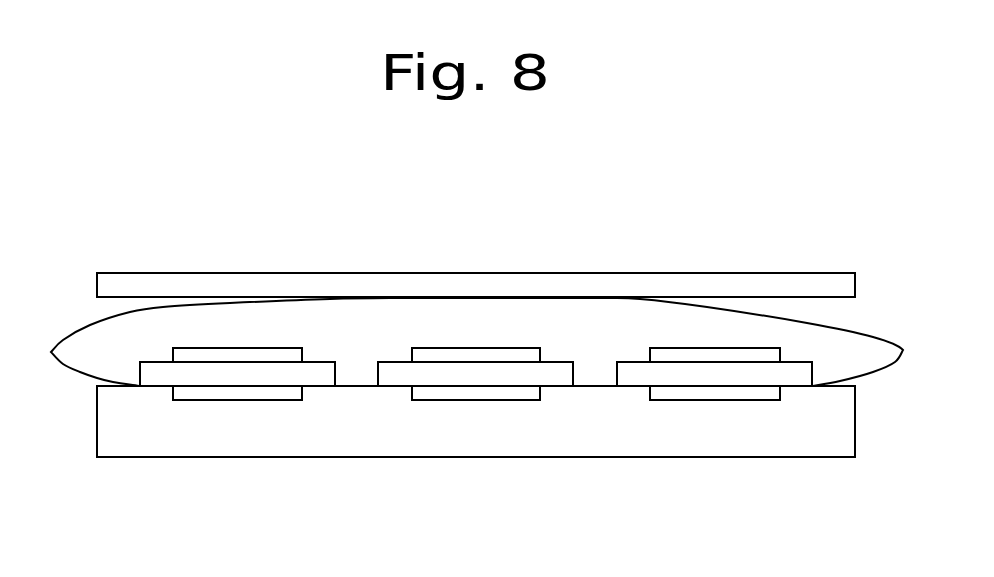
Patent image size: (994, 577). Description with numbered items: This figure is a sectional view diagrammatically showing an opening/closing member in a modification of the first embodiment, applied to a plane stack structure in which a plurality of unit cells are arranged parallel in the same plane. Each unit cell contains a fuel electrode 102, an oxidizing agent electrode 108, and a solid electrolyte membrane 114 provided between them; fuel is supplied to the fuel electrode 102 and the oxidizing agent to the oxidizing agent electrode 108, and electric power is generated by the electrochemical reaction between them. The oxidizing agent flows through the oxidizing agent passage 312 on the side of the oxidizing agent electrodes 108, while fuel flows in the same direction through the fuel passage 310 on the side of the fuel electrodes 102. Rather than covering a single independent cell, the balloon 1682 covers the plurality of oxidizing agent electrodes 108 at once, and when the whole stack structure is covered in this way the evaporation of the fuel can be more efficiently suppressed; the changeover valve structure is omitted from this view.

The oxidizing agent passage 312 is at (130, 313).
The fuel passage 310 is at (136, 437).
The balloon 1682 is at (525, 305).
The solid electrolyte membrane 114 is at (286, 372).
The oxidizing agent electrode 108 is at (257, 352).
The fuel electrode 102 is at (221, 400).